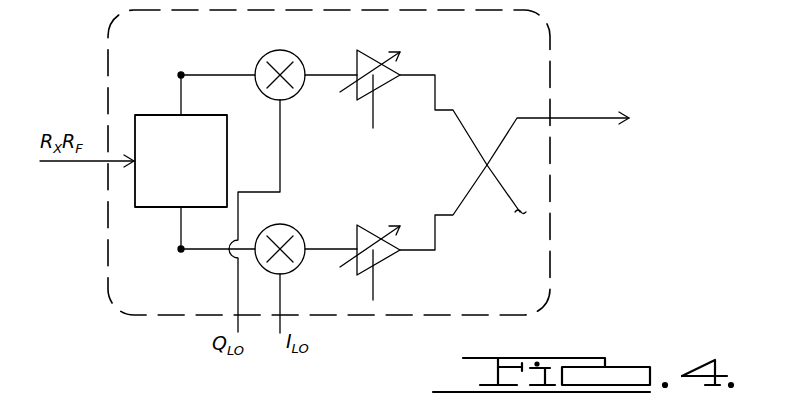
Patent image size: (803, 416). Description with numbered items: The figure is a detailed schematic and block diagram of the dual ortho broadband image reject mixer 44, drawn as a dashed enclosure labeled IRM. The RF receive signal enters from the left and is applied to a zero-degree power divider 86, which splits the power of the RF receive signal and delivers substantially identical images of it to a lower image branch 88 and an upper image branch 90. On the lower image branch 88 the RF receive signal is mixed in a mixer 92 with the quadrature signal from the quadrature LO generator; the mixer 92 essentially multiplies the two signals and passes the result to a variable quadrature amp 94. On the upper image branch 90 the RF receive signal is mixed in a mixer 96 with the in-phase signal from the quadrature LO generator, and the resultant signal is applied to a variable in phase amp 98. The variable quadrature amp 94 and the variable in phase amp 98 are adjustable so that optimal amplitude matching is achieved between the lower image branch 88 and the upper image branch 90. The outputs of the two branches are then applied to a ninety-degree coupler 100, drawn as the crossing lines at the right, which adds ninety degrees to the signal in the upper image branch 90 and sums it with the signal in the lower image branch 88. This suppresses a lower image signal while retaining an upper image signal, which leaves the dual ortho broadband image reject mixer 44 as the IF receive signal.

The dual ortho broadband image reject mixer 44 is at (540, 176).
The 0° power divider 86 is at (151, 208).
The lower image branch 88 is at (223, 75).
The upper image branch 90 is at (198, 252).
The mixer 92 is at (291, 95).
The variable quadrature amp 94 is at (383, 88).
The mixer 96 is at (298, 243).
The variable in phase amp 98 is at (370, 234).
The 90° coupler 100 is at (488, 202).